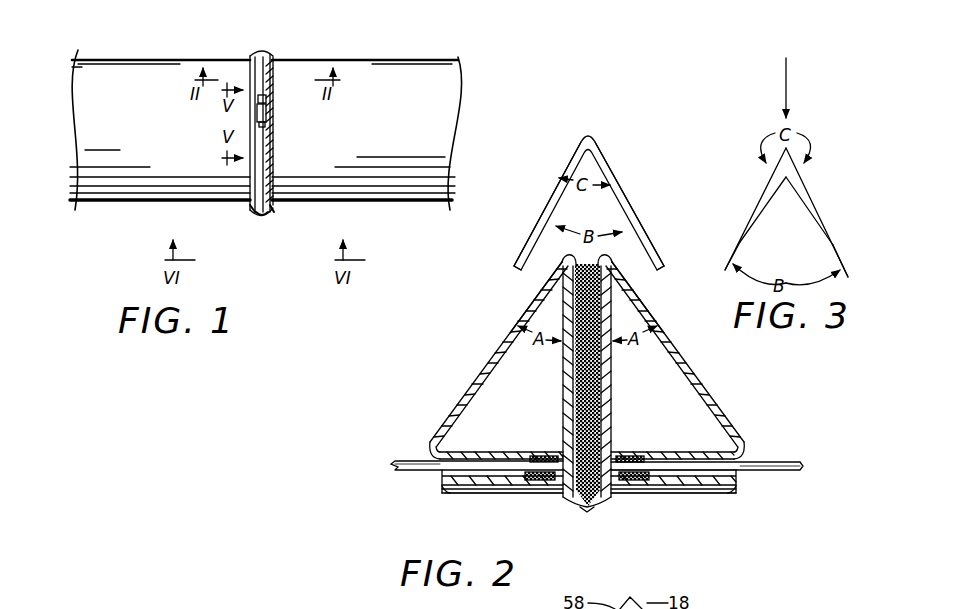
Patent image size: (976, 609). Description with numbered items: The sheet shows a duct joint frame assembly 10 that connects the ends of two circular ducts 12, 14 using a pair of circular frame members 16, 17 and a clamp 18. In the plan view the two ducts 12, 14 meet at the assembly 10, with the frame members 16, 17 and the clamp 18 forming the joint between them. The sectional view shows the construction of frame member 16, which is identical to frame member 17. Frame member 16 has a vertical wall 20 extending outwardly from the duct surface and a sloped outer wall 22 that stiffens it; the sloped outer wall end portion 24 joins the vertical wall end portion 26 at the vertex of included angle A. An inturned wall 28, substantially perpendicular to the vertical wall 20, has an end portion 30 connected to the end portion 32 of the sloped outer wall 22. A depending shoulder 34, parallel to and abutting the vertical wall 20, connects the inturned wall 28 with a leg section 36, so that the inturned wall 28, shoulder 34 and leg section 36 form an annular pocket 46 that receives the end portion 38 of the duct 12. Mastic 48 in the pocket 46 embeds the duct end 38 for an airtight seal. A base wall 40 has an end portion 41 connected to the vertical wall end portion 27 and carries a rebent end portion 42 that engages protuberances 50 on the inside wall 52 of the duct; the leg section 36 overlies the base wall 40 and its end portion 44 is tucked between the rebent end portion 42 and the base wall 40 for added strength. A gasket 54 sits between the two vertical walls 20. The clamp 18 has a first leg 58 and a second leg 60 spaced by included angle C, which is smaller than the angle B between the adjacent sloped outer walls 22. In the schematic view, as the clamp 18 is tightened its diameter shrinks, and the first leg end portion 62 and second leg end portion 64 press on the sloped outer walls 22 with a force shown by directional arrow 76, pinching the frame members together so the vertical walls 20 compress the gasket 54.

In FIG. 1, the duct joint frame assembly 10 is at (270, 52).
In FIG. 1, the circular duct 12 is at (145, 57).
In FIG. 2, the circular duct 12 is at (420, 460).
In FIG. 1, the circular duct 14 is at (388, 59).
In FIG. 2, the circular duct 14 is at (781, 461).
In FIG. 1, the frame member 16 is at (247, 208).
In FIG. 2, the frame member 16 is at (589, 397).
In FIG. 1, the frame member 17 is at (273, 212).
In FIG. 1, the clamp 18 is at (258, 216).
In FIG. 2, the clamp 18 is at (600, 130).
In FIG. 3, the clamp 18 is at (787, 209).
In FIG. 2, the vertical wall 20 is at (561, 391).
In FIG. 2, the sloped outer wall 22 is at (482, 362).
In FIG. 3, the sloped outer wall 22 is at (733, 252).
In FIG. 2, the end portion 24 is at (538, 292).
In FIG. 2, the end portion 26 is at (562, 262).
In FIG. 2, the end portion 27 is at (588, 513).
In FIG. 2, the inturned wall 28 is at (500, 449).
In FIG. 2, the end portion 30 is at (452, 410).
In FIG. 2, the end portion 32 is at (437, 446).
In FIG. 2, the depending shoulder 34 is at (584, 508).
In FIG. 2, the leg section 36 is at (496, 488).
In FIG. 2, the end portion 38 is at (544, 457).
In FIG. 2, the base wall section 40 is at (590, 485).
In FIG. 2, the end portion 41 is at (632, 492).
In FIG. 2, the rebent end portion 42 is at (442, 479).
In FIG. 2, the end portion 44 is at (444, 488).
In FIG. 2, the annular pocket 46 is at (518, 487).
In FIG. 2, the mastic 48 is at (548, 481).
In FIG. 2, the protuberances 50 is at (479, 494).
In FIG. 2, the inside wall 52 is at (420, 471).
In FIG. 2, the gasket 54 is at (599, 430).
In FIG. 2, the first leg 58 is at (550, 178).
In FIG. 3, the first leg 58 is at (768, 180).
In FIG. 2, the second leg 60 is at (626, 184).
In FIG. 3, the second leg 60 is at (811, 200).
In FIG. 2, the end portion 62 is at (518, 262).
In FIG. 3, the end portion 62 is at (741, 240).
In FIG. 2, the end portion 64 is at (661, 262).
In FIG. 3, the end portion 64 is at (831, 243).
In FIG. 3, the directional arrow 76 is at (784, 82).